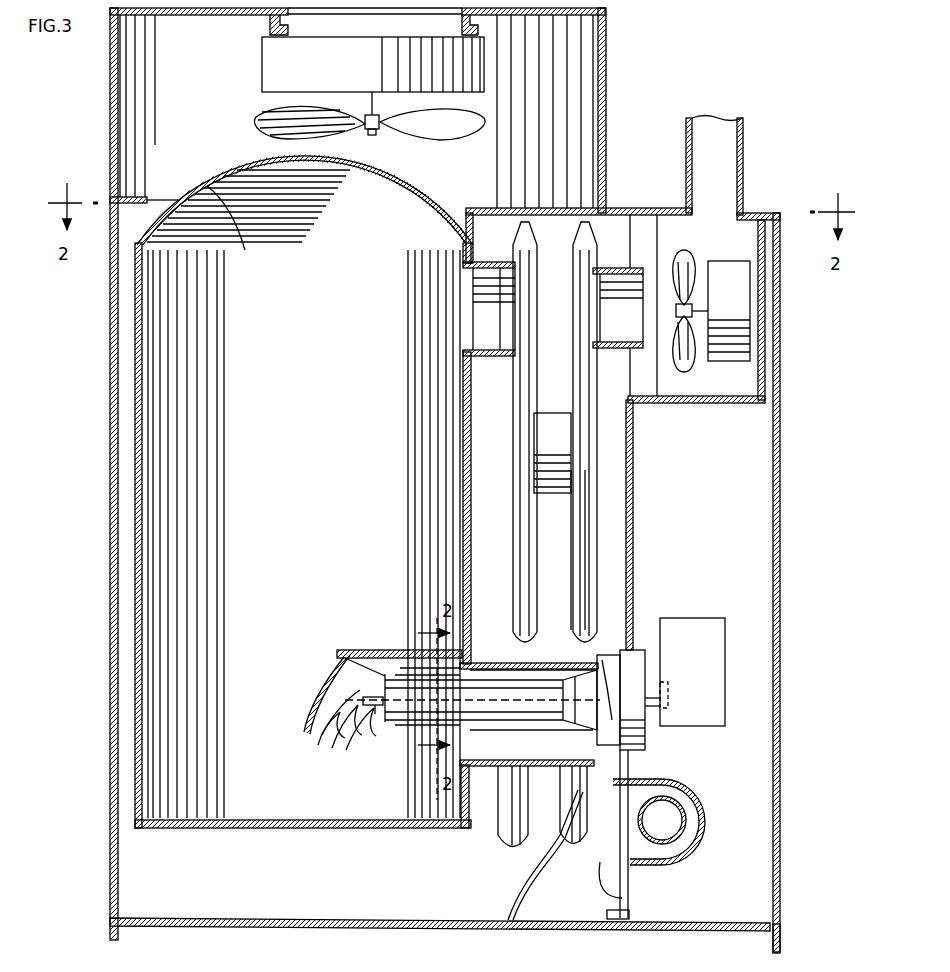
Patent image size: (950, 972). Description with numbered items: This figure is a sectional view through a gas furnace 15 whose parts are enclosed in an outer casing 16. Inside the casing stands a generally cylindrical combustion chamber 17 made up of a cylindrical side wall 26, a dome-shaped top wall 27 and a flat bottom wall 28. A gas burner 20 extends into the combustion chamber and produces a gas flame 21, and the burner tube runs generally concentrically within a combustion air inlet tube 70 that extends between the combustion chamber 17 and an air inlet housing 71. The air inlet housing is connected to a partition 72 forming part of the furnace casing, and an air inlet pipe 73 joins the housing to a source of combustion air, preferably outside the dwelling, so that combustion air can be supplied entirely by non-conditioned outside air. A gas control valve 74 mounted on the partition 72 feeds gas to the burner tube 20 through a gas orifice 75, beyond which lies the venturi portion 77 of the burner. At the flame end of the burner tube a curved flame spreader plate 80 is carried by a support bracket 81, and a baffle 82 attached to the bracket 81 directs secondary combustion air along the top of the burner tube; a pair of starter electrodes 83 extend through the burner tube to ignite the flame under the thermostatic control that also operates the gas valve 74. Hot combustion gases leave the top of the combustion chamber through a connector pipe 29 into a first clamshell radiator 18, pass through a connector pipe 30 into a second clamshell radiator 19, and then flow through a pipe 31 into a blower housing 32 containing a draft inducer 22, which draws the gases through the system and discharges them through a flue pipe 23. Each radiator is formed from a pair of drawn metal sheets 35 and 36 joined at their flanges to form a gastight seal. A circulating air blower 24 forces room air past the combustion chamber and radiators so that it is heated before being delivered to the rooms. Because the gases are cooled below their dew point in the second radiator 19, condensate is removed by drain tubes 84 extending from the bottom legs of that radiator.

The furnace 15 is at (622, 80).
The outer casing 16 is at (116, 685).
The combustion chamber 17 is at (135, 465).
The first clamshell radiator 18 is at (512, 380).
The second clamshell radiator 19 is at (590, 525).
The gas burner 20 is at (425, 742).
The gas flame 21 is at (330, 742).
The draft inducer 22 is at (688, 362).
The flue pipe 23 is at (745, 170).
The circulating air blower 24 is at (262, 122).
The cylindrical side wall 26 is at (463, 530).
The dome-shaped top wall 27 is at (210, 193).
The flat bottom wall 28 is at (247, 828).
The connector pipe 29 is at (492, 284).
The connector pipe 30 is at (548, 494).
The pipe 31 is at (603, 350).
The blower housing 32 is at (661, 404).
The metal sheet 35 is at (590, 585).
The metal sheet 36 is at (571, 592).
The combustion air inlet tube 70 is at (483, 768).
The air inlet housing 71 is at (630, 900).
The partition 72 is at (633, 585).
The air inlet pipe 73 is at (678, 806).
The gas control valve 74 is at (697, 630).
The gas orifice 75 is at (607, 656).
The venturi portion 77 is at (540, 724).
The flame spreader plate 80 is at (322, 688).
The support bracket 81 is at (338, 668).
The baffle 82 is at (410, 650).
The starter electrodes 83 is at (372, 716).
The drain tubes 84 is at (514, 893).